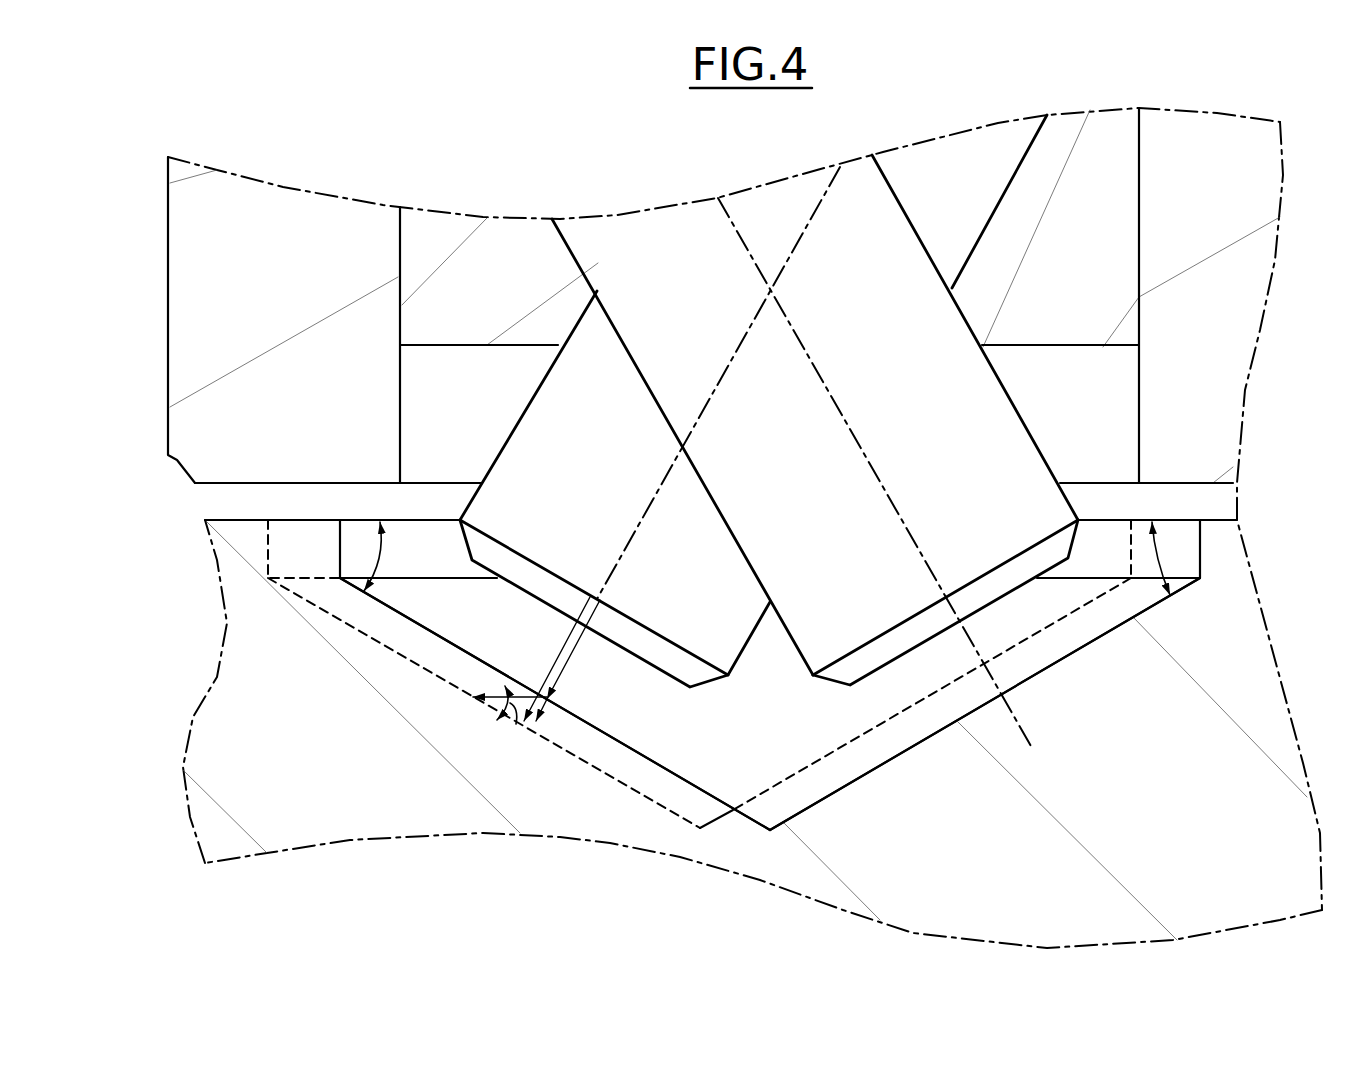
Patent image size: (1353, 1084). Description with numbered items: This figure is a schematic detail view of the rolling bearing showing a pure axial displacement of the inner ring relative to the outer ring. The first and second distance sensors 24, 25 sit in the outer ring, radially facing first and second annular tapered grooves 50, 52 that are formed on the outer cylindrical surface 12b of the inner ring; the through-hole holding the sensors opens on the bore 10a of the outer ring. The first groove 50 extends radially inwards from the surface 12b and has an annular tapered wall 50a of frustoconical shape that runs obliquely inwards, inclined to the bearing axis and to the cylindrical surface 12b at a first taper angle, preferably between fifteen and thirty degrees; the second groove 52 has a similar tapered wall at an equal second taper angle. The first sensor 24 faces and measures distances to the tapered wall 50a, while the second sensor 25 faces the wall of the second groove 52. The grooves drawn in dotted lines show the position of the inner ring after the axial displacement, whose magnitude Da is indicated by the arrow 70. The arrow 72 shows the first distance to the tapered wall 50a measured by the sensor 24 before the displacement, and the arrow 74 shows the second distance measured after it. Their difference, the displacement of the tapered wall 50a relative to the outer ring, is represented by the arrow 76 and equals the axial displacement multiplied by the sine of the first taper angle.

The bore 10a is at (230, 484).
The outer cylindrical surface 12b is at (1217, 519).
The first distance sensor 24 is at (573, 441).
The second distance sensor 25 is at (962, 449).
The first annular tapered groove 50 is at (640, 750).
The tapered wall 50a is at (687, 778).
The second annular tapered groove 52 is at (830, 748).
The arrow illustrating axial displacement 70 is at (493, 697).
The arrow illustrating first distance 72 is at (530, 648).
The arrow illustrating second distance 74 is at (530, 648).
The arrow illustrating displacement of tapered wall 76 is at (516, 724).